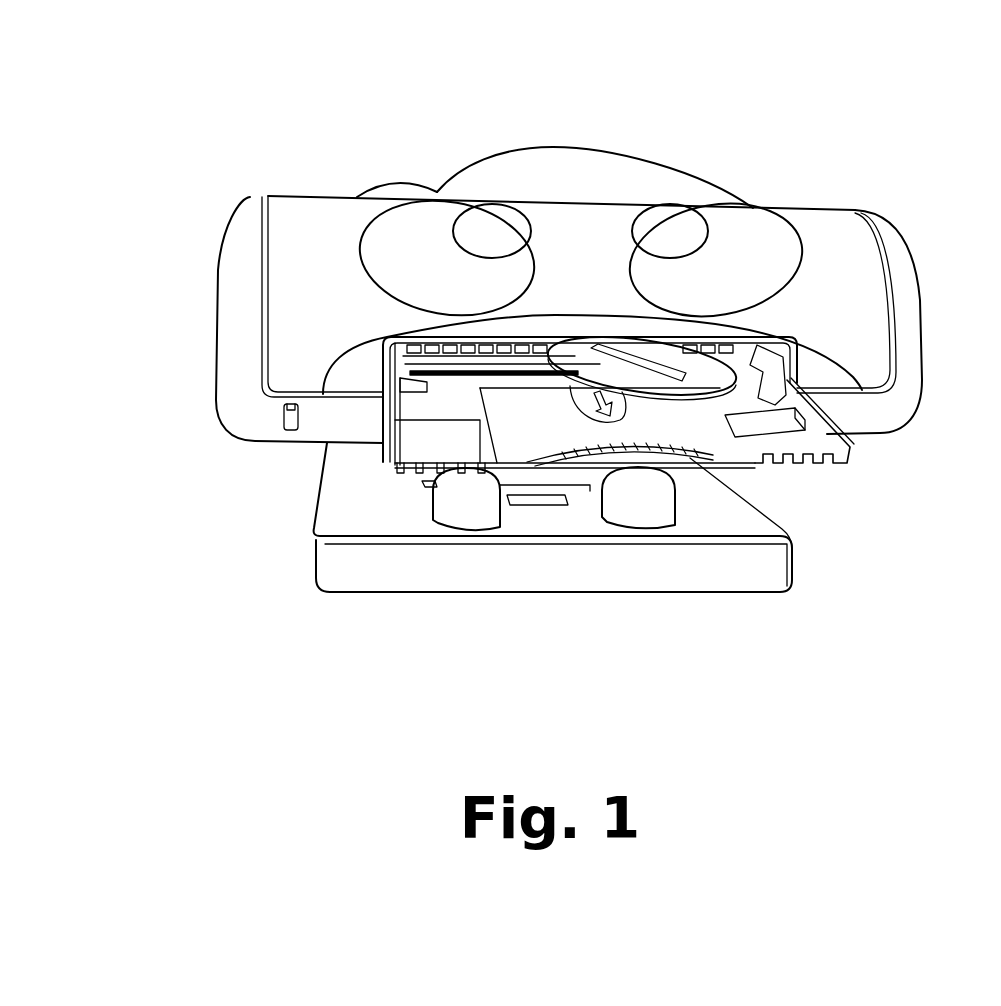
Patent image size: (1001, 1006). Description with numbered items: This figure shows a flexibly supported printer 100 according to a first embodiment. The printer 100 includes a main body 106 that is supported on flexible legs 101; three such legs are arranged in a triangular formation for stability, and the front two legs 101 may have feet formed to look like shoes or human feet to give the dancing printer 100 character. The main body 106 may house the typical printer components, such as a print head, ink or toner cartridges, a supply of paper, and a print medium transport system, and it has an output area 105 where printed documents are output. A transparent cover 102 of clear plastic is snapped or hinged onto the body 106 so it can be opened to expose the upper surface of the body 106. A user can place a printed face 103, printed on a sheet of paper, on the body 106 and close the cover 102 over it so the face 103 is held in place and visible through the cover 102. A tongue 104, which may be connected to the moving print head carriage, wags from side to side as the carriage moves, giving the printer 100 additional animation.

The flexibly supported printer 100 is at (603, 178).
The flexible legs 101 is at (467, 503).
The transparent cover 102 is at (267, 297).
The printed face 103 is at (802, 228).
The tongue 104 is at (703, 378).
The output area 105 is at (643, 427).
The main body 106 is at (252, 225).